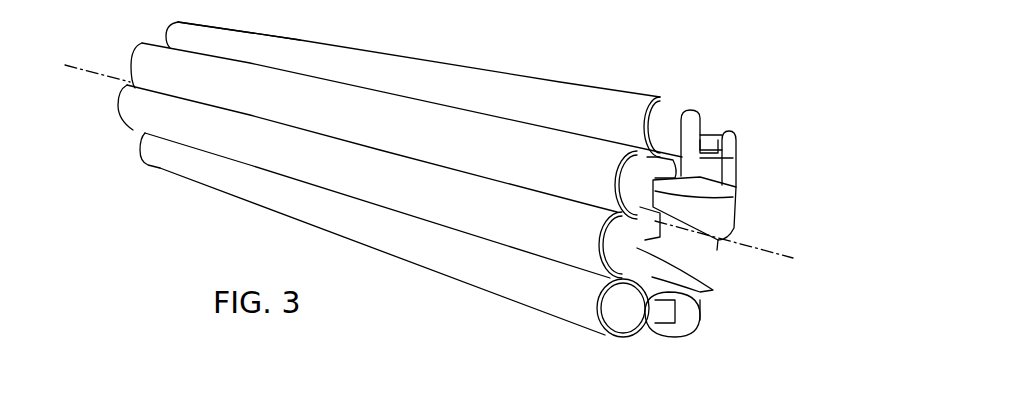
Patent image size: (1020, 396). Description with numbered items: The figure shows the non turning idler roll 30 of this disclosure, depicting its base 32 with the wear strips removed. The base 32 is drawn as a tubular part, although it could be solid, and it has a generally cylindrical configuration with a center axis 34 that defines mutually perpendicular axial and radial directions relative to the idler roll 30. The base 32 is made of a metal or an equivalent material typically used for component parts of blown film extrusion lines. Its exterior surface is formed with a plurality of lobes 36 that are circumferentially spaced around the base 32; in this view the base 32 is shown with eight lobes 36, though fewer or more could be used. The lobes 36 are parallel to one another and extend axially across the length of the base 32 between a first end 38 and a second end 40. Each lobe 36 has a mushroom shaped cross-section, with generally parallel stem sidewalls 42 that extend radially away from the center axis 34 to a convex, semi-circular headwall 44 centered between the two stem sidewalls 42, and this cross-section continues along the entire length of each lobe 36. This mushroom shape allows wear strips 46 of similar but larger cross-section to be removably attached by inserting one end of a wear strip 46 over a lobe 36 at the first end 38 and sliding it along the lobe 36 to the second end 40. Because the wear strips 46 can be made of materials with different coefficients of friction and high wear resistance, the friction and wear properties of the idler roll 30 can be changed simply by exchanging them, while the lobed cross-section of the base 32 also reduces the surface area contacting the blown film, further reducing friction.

The non turning idler roll 30 is at (627, 54).
The base 32 is at (723, 238).
The center axis 34 is at (790, 256).
The lobes 36 is at (696, 112).
The first end 38 is at (702, 308).
The second end 40 is at (118, 106).
The stem sidewalls 42 is at (735, 135).
The headwall 44 is at (692, 108).
The wear strips 46 is at (582, 82).